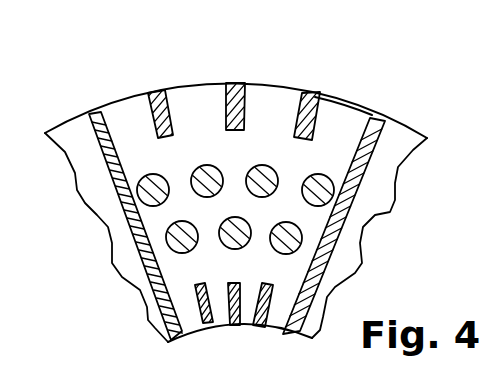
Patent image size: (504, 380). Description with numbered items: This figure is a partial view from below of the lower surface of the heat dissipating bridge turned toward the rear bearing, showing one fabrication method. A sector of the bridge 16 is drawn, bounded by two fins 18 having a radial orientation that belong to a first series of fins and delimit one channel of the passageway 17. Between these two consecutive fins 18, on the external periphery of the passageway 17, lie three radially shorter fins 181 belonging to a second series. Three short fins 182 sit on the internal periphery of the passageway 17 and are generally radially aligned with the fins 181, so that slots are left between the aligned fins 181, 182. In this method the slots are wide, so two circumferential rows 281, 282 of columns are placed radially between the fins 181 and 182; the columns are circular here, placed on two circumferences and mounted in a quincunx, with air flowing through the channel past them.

The ring segment body 16 is at (116, 96).
The passageway 17 is at (264, 120).
The fins 18 is at (380, 148).
The fins 181 is at (317, 115).
The short fins 182 is at (196, 303).
The circumferential row of columns 281 is at (333, 187).
The circumferential row of columns 282 is at (292, 238).